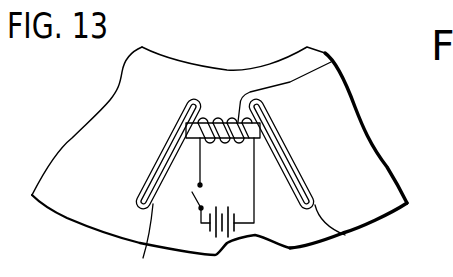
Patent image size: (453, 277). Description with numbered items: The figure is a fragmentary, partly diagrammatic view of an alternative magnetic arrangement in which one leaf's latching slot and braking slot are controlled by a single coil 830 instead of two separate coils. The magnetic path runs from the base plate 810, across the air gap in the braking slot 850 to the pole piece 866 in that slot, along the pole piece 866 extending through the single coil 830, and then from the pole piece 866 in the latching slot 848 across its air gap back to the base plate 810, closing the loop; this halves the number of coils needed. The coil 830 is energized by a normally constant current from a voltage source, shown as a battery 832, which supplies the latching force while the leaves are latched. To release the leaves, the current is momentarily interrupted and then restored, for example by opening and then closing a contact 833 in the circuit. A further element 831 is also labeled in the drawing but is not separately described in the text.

The base plate 810 is at (352, 138).
The coil 830 is at (218, 121).
The wire lead 831 is at (330, 62).
The battery 832 is at (234, 218).
The contact 833 is at (192, 197).
The latching slot 848 is at (137, 202).
The braking slot 850 is at (315, 203).
The pole piece 866 is at (345, 235).